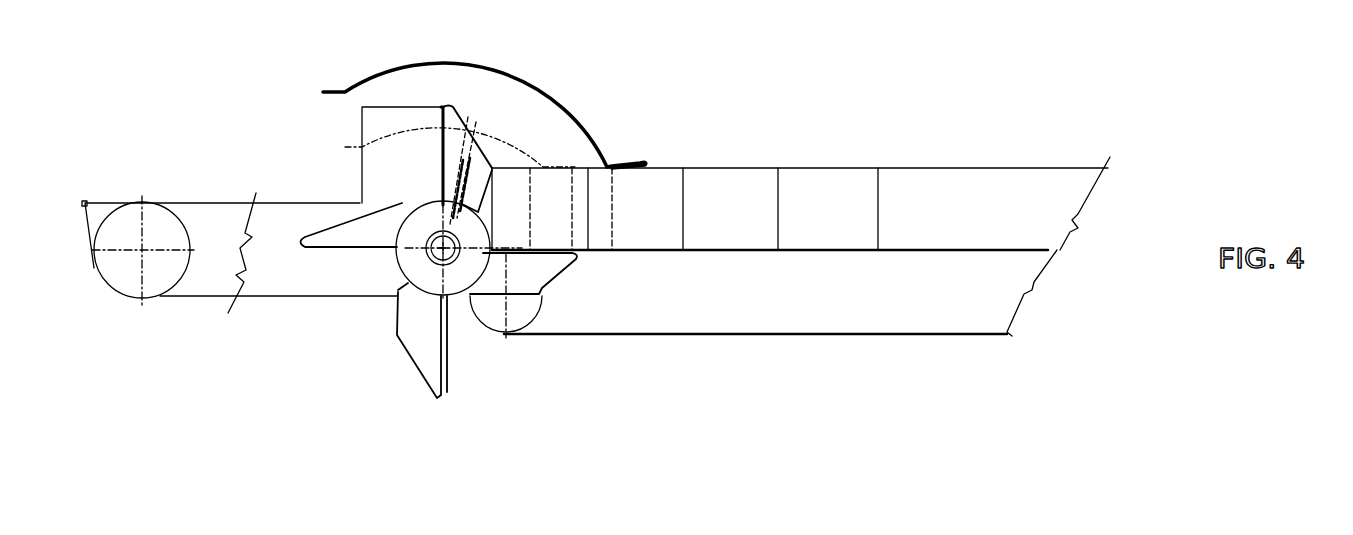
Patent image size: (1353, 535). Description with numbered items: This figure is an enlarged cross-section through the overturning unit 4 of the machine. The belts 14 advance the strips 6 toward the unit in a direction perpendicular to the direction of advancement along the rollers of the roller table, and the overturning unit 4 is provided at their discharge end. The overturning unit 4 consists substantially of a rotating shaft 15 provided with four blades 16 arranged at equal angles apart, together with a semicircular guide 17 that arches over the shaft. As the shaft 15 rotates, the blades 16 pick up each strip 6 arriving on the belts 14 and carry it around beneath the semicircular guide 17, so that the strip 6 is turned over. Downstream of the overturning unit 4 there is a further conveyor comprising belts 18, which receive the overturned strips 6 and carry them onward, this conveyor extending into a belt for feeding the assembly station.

The overturning unit 4 is at (586, 92).
The strips 6 is at (833, 178).
The belts 14 is at (957, 248).
The rotating shaft 15 is at (448, 262).
The blades 16 is at (357, 248).
The semicircular guide 17 is at (520, 147).
The belts 18 is at (190, 202).